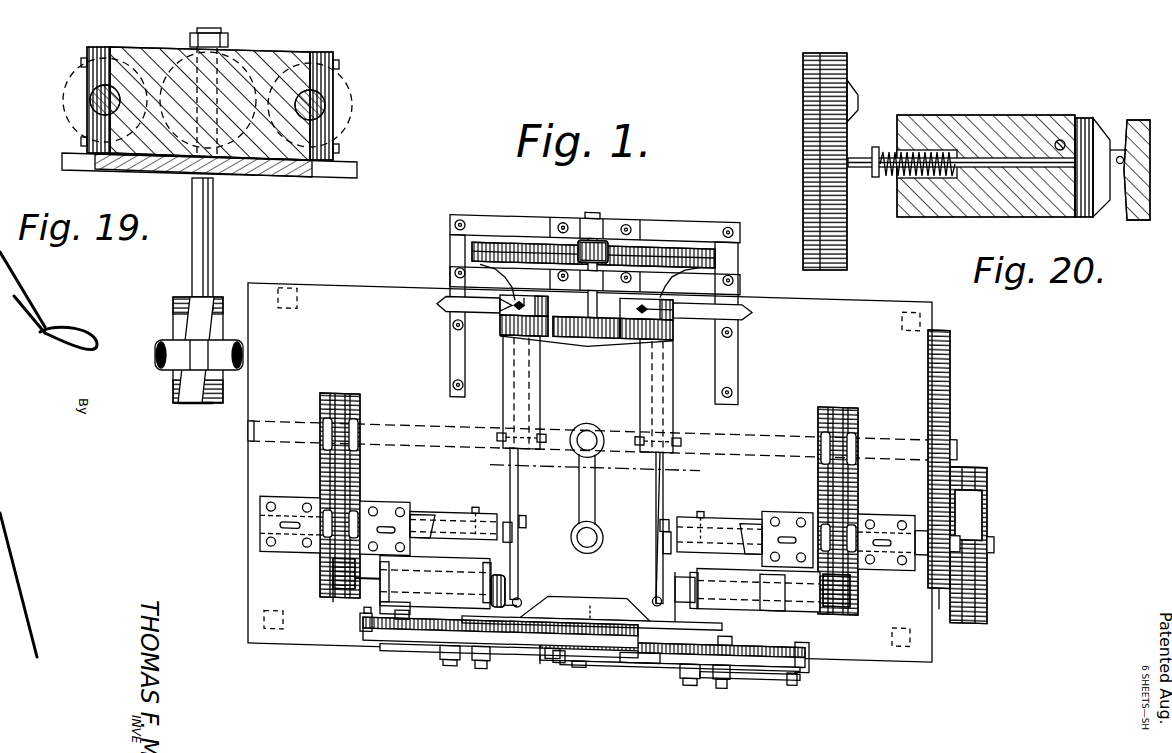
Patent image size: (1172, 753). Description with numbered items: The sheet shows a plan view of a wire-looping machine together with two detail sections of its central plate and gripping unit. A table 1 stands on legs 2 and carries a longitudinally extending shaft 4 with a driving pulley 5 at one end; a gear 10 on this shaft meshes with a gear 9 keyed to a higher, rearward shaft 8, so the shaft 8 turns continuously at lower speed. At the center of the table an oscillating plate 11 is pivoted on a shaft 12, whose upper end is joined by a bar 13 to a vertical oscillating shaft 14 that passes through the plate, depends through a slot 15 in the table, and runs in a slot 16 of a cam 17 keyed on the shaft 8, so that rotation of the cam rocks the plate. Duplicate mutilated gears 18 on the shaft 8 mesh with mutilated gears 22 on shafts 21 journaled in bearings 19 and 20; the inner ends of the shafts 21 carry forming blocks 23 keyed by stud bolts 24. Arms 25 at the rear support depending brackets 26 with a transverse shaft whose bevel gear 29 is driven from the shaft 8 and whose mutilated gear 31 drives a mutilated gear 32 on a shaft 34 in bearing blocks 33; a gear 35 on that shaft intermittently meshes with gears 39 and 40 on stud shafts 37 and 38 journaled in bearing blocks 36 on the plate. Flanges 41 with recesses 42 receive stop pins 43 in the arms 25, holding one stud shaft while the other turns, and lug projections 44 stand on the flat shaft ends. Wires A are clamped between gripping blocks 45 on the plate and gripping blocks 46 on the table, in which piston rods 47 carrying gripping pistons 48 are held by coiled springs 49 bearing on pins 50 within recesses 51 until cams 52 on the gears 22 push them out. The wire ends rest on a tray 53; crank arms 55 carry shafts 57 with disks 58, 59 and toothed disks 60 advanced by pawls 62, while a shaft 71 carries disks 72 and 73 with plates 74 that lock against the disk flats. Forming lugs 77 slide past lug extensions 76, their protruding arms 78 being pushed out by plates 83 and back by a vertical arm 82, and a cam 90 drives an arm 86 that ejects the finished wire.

In FIG. 1, the table 1 is at (350, 326).
In FIG. 1, the legs 2 is at (292, 296).
In FIG. 1, the longitudinally extending shaft 4 is at (994, 522).
In FIG. 1, the driving pulley 5 is at (987, 552).
In FIG. 19, the longitudinally extending shaft 8 is at (235, 346).
In FIG. 1, the longitudinally extending shaft 8 is at (882, 422).
In FIG. 1, the gear 9 is at (953, 392).
In FIG. 1, the gear 10 is at (939, 590).
In FIG. 19, the oscillating plate 11 is at (160, 45).
In FIG. 20, the oscillating plate 11 is at (1145, 222).
In FIG. 1, the shaft 12 is at (602, 536).
In FIG. 19, the bar 13 is at (232, 48).
In FIG. 1, the bar 13 is at (596, 482).
In FIG. 19, the oscillating shaft 14 is at (215, 223).
In FIG. 1, the oscillating shaft 14 is at (592, 425).
In FIG. 19, the slot 15 is at (182, 176).
In FIG. 19, the slot 16 is at (190, 396).
In FIG. 19, the cam 17 is at (220, 307).
In FIG. 1, the mutilated gears 18 is at (345, 399).
In FIG. 1, the bearings 19 is at (505, 459).
In FIG. 1, the bearings 20 is at (388, 499).
In FIG. 1, the shafts 21 is at (263, 496).
In FIG. 20, the mutilated gear 22 is at (803, 192).
In FIG. 1, the mutilated gear 22 is at (358, 481).
In FIG. 1, the forming blocks 23 is at (442, 514).
In FIG. 1, the stud bolts 24 is at (476, 501).
In FIG. 1, the arms 25 is at (448, 361).
In FIG. 1, the depending brackets 26 is at (488, 211).
In FIG. 1, the bevel gear 29 is at (514, 614).
In FIG. 1, the mutilated gear 31 is at (690, 234).
In FIG. 1, the mutilated gear 32 is at (628, 236).
In FIG. 1, the bearing blocks 33 is at (565, 207).
In FIG. 1, the shaft 34 is at (597, 204).
In FIG. 1, the gear 35 is at (576, 333).
In FIG. 19, the bearing blocks 36 is at (85, 66).
In FIG. 1, the bearing blocks 36 is at (505, 393).
In FIG. 19, the stud shaft 37 is at (333, 108).
In FIG. 1, the stud shaft 37 is at (667, 469).
In FIG. 19, the stud shaft 38 is at (88, 97).
In FIG. 1, the stud shaft 38 is at (500, 443).
In FIG. 1, the gear 39 is at (676, 318).
In FIG. 19, the gear 40 is at (70, 122).
In FIG. 1, the gear 40 is at (505, 324).
In FIG. 1, the flanges 41 is at (480, 258).
In FIG. 1, the recesses 42 is at (748, 271).
In FIG. 1, the stop pins 43 is at (753, 294).
In FIG. 1, the lug projections 44 is at (523, 508).
In FIG. 20, the gripping blocks 45 is at (1122, 210).
In FIG. 1, the gripping blocks 45 is at (655, 587).
In FIG. 20, the gripping blocks 46 is at (965, 118).
In FIG. 1, the gripping blocks 46 is at (385, 601).
In FIG. 20, the piston rods 47 is at (982, 170).
In FIG. 1, the piston rods 47 is at (378, 598).
In FIG. 20, the gripping piston 48 is at (1087, 217).
In FIG. 1, the gripping piston 48 is at (524, 290).
In FIG. 20, the coiled springs 49 is at (880, 172).
In FIG. 20, the pins 50 is at (875, 146).
In FIG. 20, the recesses 51 is at (1090, 118).
In FIG. 1, the recesses 51 is at (700, 583).
In FIG. 20, the cams 52 is at (858, 92).
In FIG. 1, the cams 52 is at (336, 570).
In FIG. 1, the tray 53 is at (600, 586).
In FIG. 1, the crank arms 55 is at (415, 647).
In FIG. 1, the shafts 57 is at (478, 660).
In FIG. 1, the disk 58 is at (505, 650).
In FIG. 1, the disk 59 is at (790, 672).
In FIG. 1, the disks 60 is at (445, 656).
In FIG. 1, the pawl 62 is at (364, 628).
In FIG. 1, the shaft 71 is at (540, 648).
In FIG. 1, the disk 72 is at (640, 653).
In FIG. 1, the disk 73 is at (578, 659).
In FIG. 1, the plates 74 is at (558, 657).
In FIG. 1, the lug extensions 76 is at (663, 522).
In FIG. 1, the forming lugs 77 is at (524, 527).
In FIG. 1, the protruding arm 78 is at (599, 570).
In FIG. 1, the vertical arm 82 is at (775, 490).
In FIG. 1, the plates 83 is at (420, 510).
In FIG. 1, the arm 86 is at (503, 561).
In FIG. 1, the cam 90 is at (832, 600).
In FIG. 20, the wires A is at (1122, 155).